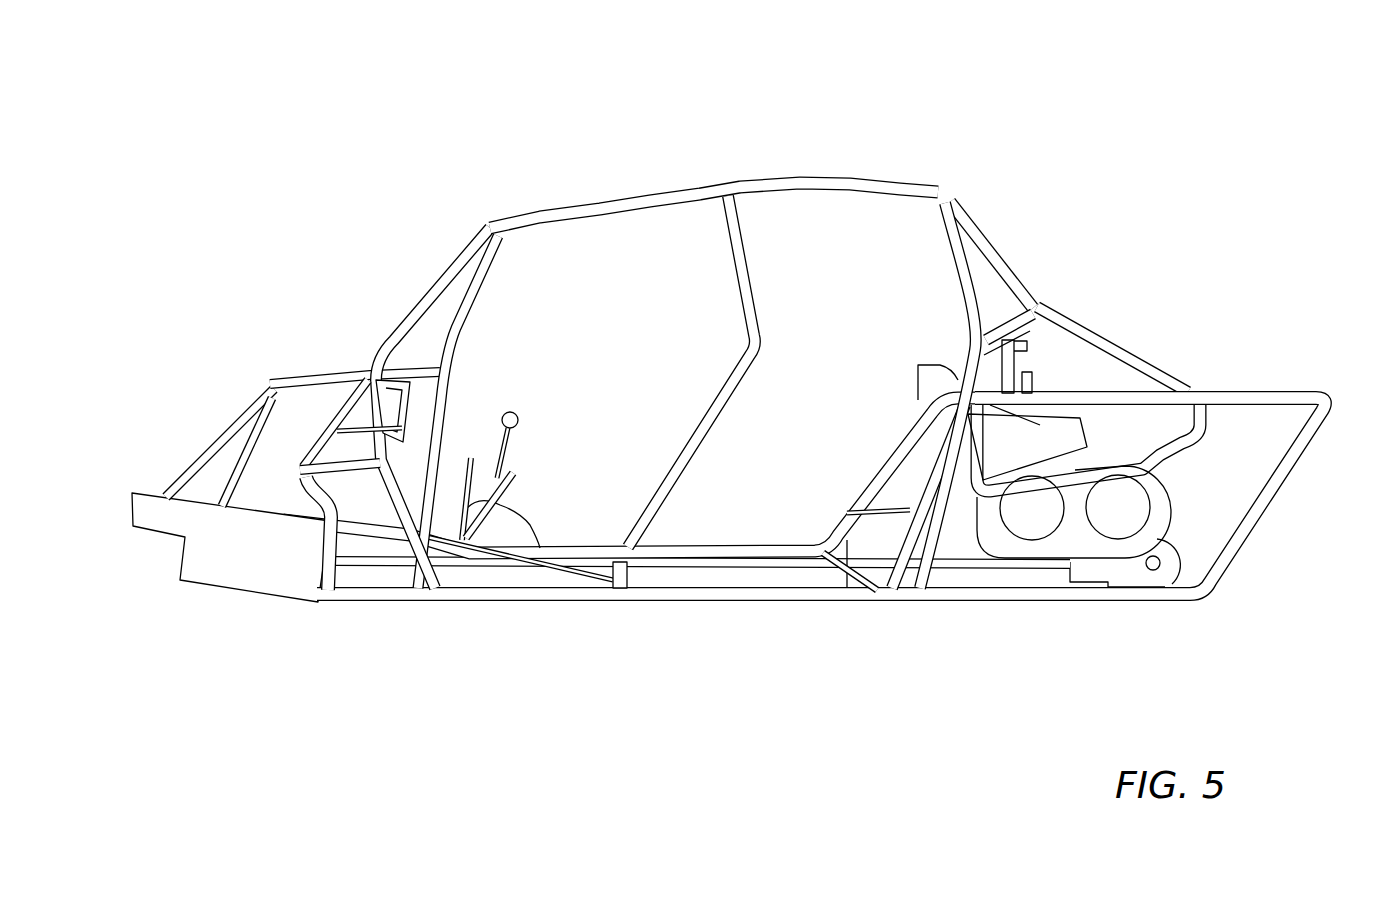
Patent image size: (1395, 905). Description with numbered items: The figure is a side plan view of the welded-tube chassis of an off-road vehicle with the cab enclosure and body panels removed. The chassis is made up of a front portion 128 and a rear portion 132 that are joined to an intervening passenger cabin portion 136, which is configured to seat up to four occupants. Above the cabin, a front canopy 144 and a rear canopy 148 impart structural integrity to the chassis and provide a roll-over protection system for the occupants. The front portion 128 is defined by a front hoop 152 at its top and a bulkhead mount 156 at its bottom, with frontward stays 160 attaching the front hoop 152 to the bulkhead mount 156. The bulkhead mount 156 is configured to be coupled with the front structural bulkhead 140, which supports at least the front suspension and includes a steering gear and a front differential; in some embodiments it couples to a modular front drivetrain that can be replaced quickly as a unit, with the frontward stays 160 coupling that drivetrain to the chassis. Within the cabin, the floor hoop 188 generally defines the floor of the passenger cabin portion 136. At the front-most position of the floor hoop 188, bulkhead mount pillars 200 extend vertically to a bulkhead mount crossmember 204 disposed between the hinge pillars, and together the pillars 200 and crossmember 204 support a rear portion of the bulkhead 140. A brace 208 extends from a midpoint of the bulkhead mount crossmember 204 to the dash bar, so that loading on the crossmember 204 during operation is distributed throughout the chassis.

The front portion 128 is at (180, 298).
The rear portion 132 is at (1300, 466).
The passenger cabin portion 136 is at (697, 621).
The front structural bulkhead 140 is at (213, 590).
The front canopy 144 is at (493, 220).
The rear canopy 148 is at (965, 224).
The front hoop 152 is at (313, 383).
The bulkhead mount 156 is at (152, 495).
The frontward stays 160 is at (238, 468).
The floor hoop 188 is at (477, 595).
The bulkhead mount pillars 200 is at (333, 572).
The bulkhead mount crossmember 204 is at (348, 466).
The brace 208 is at (348, 463).